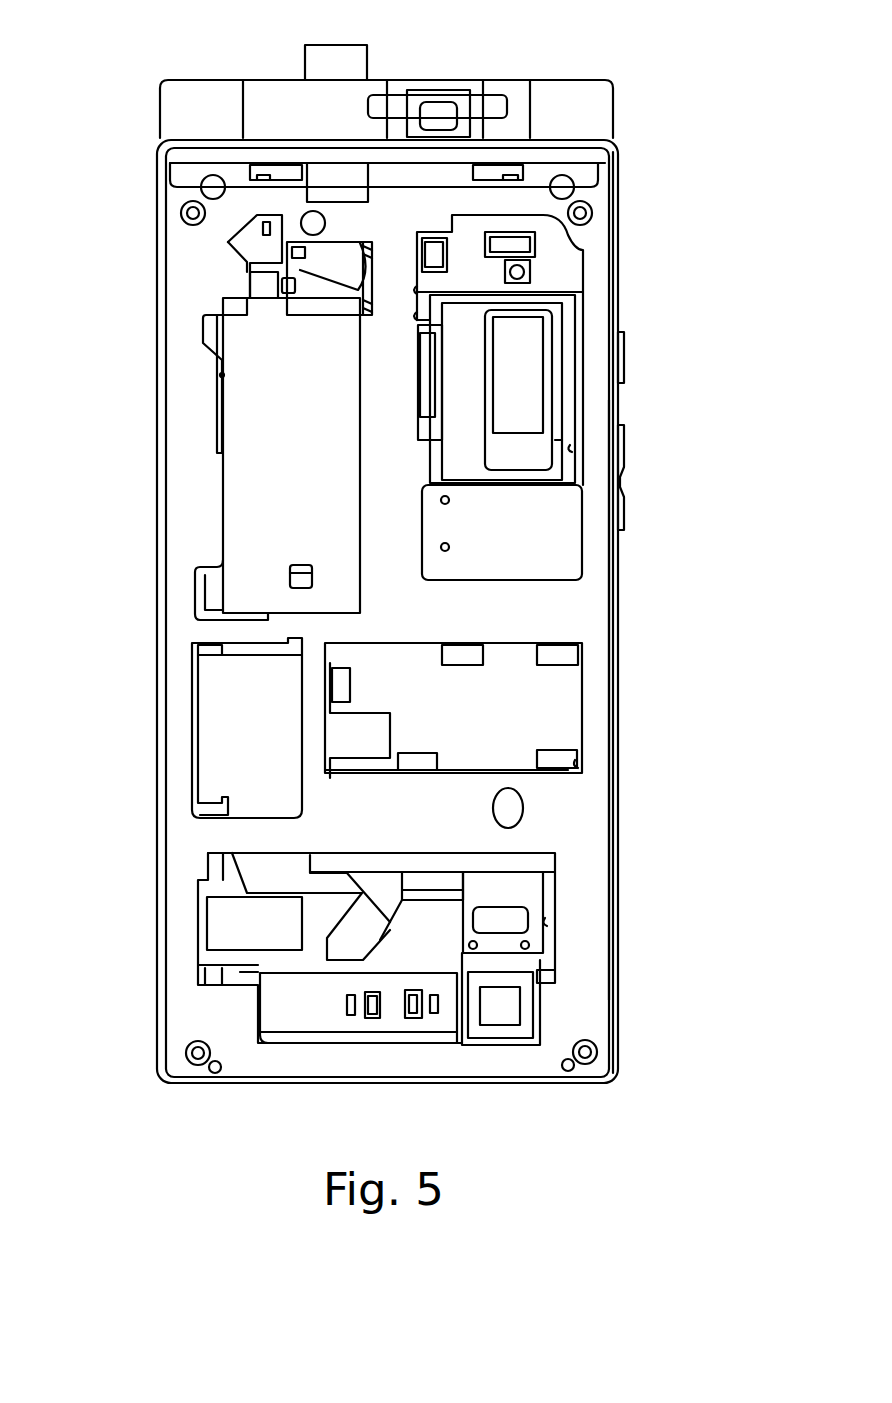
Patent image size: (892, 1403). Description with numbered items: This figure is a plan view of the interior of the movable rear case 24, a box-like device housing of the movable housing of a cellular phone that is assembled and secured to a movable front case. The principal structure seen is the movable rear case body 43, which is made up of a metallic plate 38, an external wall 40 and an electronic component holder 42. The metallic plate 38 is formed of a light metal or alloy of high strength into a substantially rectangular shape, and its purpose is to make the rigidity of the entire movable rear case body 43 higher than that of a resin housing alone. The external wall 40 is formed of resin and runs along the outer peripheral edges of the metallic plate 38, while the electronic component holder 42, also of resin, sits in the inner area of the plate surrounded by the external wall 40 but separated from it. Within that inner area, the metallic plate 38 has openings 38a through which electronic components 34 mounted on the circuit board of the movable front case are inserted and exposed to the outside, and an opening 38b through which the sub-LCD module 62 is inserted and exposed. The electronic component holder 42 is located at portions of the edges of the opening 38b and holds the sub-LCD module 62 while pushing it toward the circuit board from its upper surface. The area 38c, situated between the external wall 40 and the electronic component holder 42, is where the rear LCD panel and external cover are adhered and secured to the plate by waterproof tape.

The movable rear case 24 is at (152, 1007).
The electronic components 34 is at (215, 910).
The metallic plate 38 is at (597, 835).
The openings 38a is at (222, 376).
The opening 38b is at (572, 448).
The area 38c is at (593, 325).
The external wall 40 is at (610, 550).
The electronic component holder 42 is at (457, 500).
The movable rear case body 43 is at (634, 681).
The sub-LCD module 62 is at (527, 370).